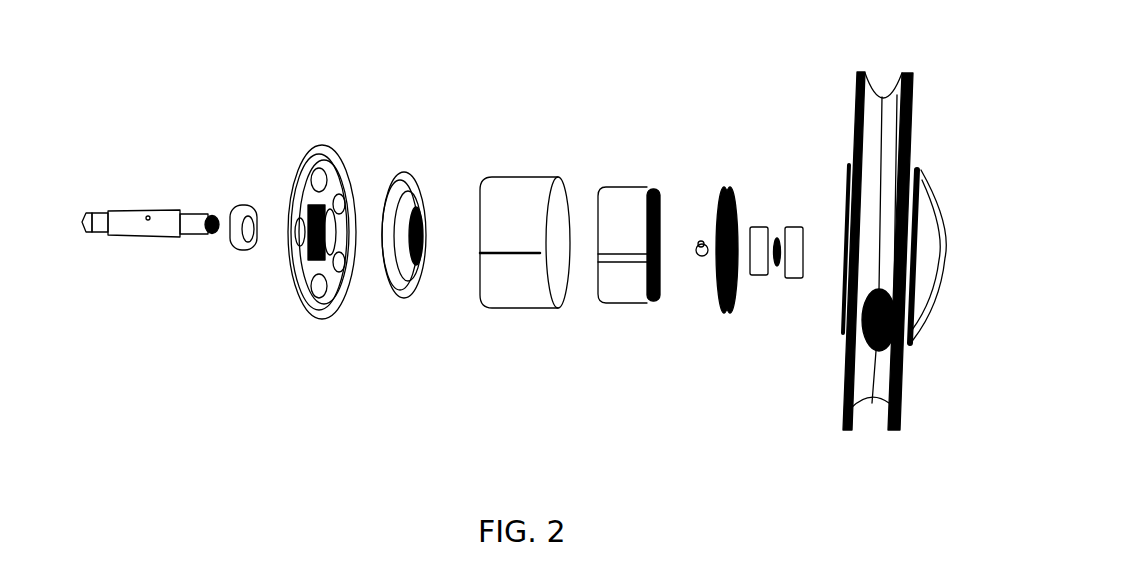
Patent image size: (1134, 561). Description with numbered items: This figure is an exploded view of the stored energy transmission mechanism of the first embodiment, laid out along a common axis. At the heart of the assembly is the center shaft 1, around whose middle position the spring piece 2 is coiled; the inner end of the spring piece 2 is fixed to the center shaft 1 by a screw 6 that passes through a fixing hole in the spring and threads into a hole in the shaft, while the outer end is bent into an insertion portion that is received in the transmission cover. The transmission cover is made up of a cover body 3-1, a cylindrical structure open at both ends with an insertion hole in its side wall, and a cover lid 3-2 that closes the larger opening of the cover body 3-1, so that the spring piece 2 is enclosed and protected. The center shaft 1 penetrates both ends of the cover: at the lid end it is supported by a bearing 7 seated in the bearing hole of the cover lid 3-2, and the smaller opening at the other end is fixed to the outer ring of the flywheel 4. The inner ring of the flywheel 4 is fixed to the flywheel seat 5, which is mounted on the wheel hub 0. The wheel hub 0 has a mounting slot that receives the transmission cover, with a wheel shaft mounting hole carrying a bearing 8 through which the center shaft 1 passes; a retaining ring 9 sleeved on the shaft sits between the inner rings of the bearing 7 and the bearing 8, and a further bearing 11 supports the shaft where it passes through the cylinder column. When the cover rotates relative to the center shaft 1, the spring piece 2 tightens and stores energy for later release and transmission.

The wheel hub 0 is at (923, 100).
The center shaft 1 is at (147, 201).
The bearing 11 is at (245, 198).
The spring piece 2 is at (632, 171).
The cover body 3-1 is at (527, 169).
The cover lid 3-2 is at (733, 178).
The flywheel 4 is at (410, 166).
The flywheel seat 5 is at (330, 141).
The screw 6 is at (700, 240).
The bearing 7 is at (760, 221).
The bearing 8 is at (798, 223).
The retaining ring 9 is at (777, 232).